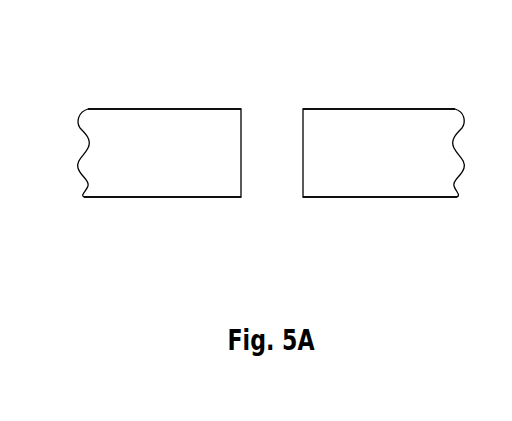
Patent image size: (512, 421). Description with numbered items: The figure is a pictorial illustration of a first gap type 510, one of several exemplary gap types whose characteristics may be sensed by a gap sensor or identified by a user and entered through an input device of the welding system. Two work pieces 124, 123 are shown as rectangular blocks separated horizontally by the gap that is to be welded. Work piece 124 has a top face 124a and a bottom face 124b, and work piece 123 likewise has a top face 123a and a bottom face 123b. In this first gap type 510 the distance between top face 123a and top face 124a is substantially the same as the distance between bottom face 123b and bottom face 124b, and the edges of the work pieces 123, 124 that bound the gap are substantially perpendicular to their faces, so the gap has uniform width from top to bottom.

The first gap type 510 is at (256, 38).
The work piece 124 is at (140, 162).
The top face 124a is at (123, 108).
The bottom face 124b is at (178, 198).
The work piece 123 is at (372, 162).
The top face 123a is at (362, 108).
The bottom face 123b is at (418, 198).